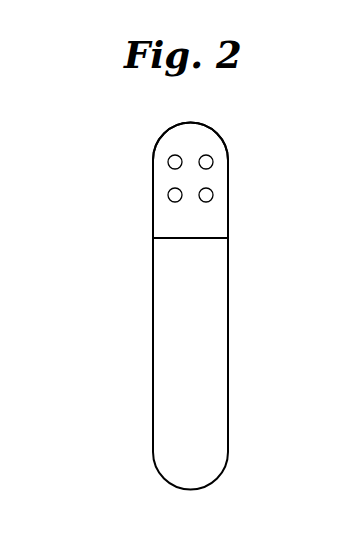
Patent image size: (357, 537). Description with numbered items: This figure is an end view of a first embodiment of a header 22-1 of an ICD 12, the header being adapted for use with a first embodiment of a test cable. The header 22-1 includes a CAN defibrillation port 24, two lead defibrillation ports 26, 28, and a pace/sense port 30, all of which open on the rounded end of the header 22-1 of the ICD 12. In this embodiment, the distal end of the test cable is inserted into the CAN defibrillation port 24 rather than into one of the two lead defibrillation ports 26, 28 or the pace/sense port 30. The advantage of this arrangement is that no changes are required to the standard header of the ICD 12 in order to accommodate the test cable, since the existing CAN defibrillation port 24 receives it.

The ICD 12 is at (228, 345).
The header 22-1 is at (180, 121).
The CAN defibrillation port 24 is at (213, 161).
The lead defibrillation port 26 is at (168, 157).
The lead defibrillation port 28 is at (168, 194).
The pace/sense port 30 is at (213, 195).